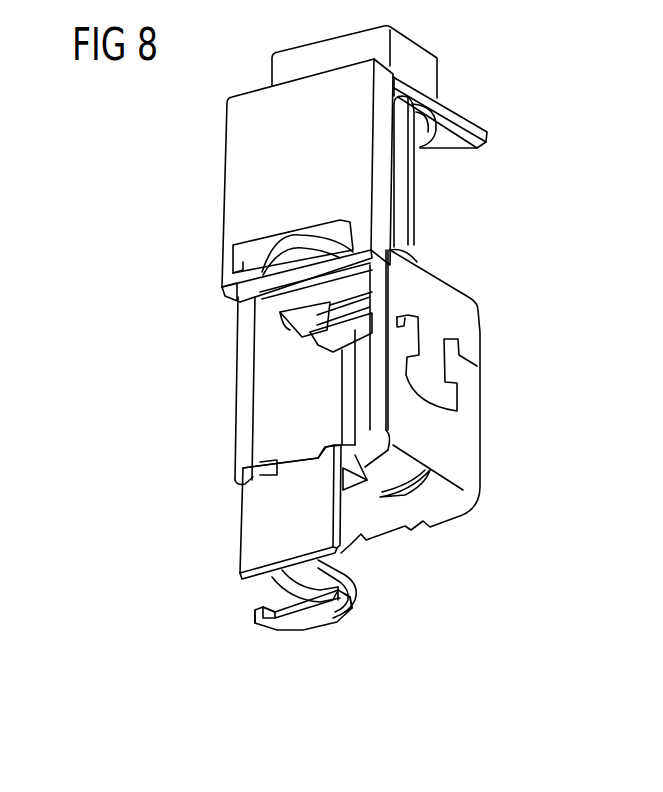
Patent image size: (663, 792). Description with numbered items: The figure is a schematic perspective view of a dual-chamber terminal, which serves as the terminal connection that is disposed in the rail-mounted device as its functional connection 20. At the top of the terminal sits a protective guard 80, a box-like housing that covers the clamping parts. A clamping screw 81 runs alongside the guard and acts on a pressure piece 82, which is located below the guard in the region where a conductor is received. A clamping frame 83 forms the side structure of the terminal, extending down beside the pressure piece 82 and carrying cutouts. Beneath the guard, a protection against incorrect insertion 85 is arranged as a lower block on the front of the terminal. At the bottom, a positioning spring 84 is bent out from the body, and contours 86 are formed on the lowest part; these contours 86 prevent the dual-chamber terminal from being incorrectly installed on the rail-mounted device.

The functional connection 20 is at (190, 286).
The protective guard 80 is at (232, 163).
The clamping screw 81 is at (402, 187).
The pressure piece 82 is at (300, 295).
The clamping frame 83 is at (463, 450).
The positioning spring 84 is at (347, 587).
The protection against incorrect insertion 85 is at (250, 527).
The contours 86 is at (310, 630).